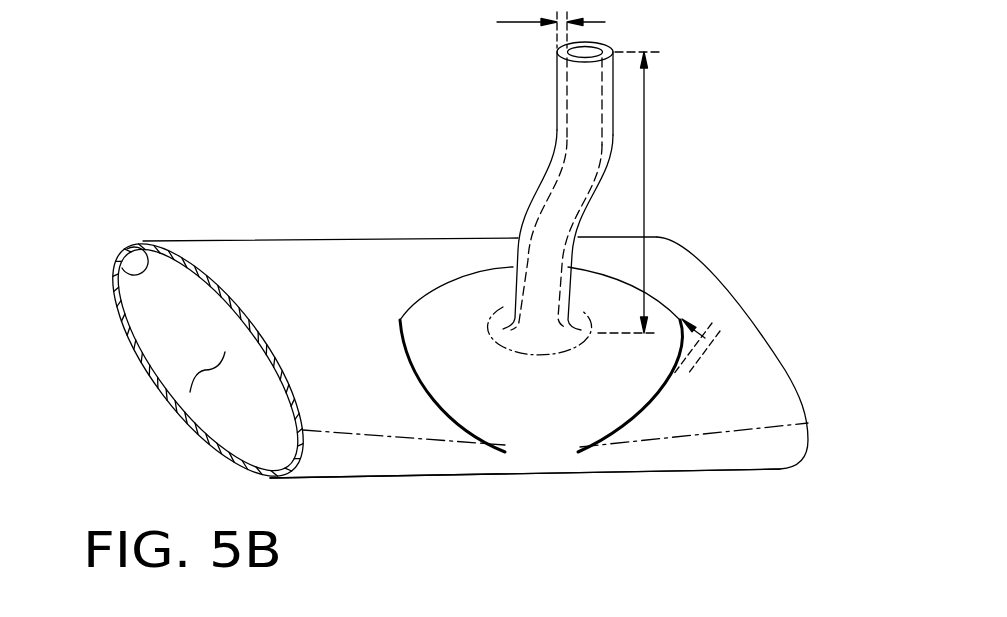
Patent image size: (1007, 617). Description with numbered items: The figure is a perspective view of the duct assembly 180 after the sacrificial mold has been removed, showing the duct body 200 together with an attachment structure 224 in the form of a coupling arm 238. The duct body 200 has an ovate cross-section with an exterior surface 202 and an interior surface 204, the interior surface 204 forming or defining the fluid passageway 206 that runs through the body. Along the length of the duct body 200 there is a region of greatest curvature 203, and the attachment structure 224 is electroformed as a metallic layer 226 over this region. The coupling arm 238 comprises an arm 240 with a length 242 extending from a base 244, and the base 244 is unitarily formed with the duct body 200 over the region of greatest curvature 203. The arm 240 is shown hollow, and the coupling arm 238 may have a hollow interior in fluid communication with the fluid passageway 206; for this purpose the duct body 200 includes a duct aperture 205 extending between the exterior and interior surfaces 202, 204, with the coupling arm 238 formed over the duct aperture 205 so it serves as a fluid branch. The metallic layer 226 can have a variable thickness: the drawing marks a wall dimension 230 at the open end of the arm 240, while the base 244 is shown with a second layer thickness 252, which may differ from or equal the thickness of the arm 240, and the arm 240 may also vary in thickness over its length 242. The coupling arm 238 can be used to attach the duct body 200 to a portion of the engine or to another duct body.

The duct assembly 180 is at (770, 152).
The duct body 200 is at (345, 273).
The exterior surface 202 is at (257, 257).
The region of greatest curvature 203 is at (615, 457).
The interior surface 204 is at (118, 273).
The duct aperture 205 is at (515, 352).
The fluid passageway 206 is at (218, 367).
The attachment structure 224 is at (555, 186).
The metallic layer 226 is at (542, 152).
The tube wall thickness 230 is at (515, 21).
The coupling arm 238 is at (613, 152).
The arm 240 is at (540, 193).
The length 242 is at (644, 200).
The base 244 is at (443, 356).
The second layer thickness 252 is at (728, 360).